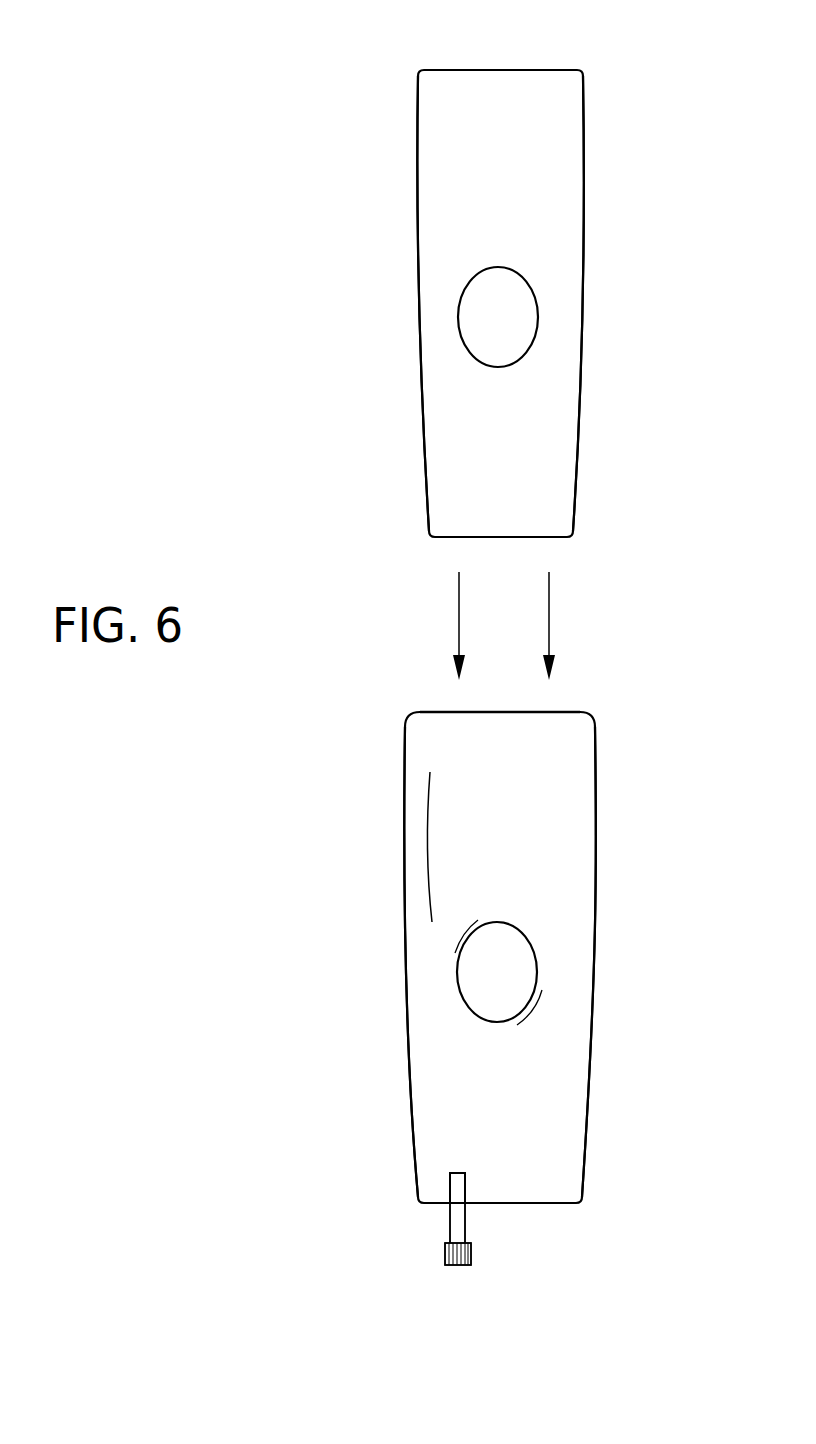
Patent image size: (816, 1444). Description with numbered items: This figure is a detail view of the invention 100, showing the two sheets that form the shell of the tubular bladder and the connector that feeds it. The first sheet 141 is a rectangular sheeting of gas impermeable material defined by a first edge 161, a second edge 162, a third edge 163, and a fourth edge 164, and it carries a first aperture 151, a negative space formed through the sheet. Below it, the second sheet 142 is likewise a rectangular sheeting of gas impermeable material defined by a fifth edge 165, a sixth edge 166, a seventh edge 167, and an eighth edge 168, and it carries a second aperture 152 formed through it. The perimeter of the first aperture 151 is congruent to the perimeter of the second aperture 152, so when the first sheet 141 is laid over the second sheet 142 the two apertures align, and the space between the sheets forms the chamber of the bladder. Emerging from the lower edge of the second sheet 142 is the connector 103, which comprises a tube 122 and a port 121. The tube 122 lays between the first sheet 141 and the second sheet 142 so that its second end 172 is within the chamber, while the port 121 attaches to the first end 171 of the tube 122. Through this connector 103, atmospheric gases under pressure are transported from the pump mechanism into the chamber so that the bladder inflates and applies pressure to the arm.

The invention 100 is at (342, 247).
The connector 103 is at (443, 1263).
The port 121 is at (453, 1267).
The tube 122 is at (448, 1218).
The first sheet 141 is at (583, 122).
The second sheet 142 is at (597, 868).
The first aperture 151 is at (506, 268).
The second aperture 152 is at (490, 922).
The first edge 161 is at (500, 70).
The second edge 162 is at (578, 467).
The third edge 163 is at (505, 537).
The fourth edge 164 is at (418, 388).
The fifth edge 165 is at (560, 712).
The sixth edge 166 is at (597, 967).
The seventh edge 167 is at (542, 1203).
The eighth edge 168 is at (405, 1003).
The first end 171 is at (462, 1235).
The second end 172 is at (462, 1170).